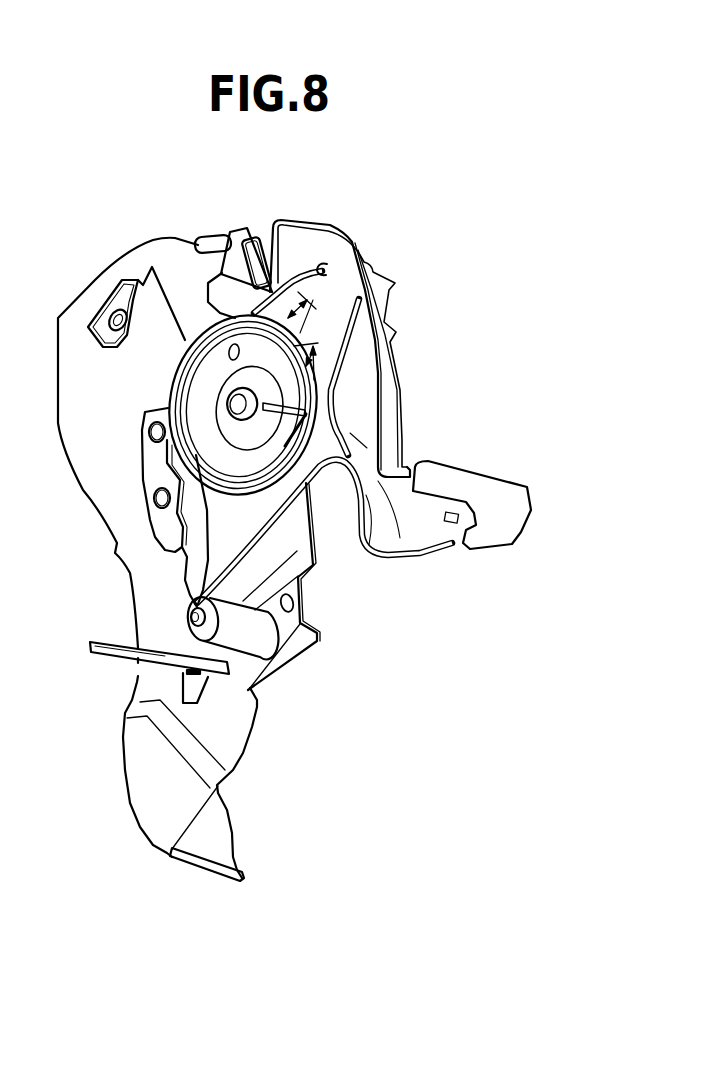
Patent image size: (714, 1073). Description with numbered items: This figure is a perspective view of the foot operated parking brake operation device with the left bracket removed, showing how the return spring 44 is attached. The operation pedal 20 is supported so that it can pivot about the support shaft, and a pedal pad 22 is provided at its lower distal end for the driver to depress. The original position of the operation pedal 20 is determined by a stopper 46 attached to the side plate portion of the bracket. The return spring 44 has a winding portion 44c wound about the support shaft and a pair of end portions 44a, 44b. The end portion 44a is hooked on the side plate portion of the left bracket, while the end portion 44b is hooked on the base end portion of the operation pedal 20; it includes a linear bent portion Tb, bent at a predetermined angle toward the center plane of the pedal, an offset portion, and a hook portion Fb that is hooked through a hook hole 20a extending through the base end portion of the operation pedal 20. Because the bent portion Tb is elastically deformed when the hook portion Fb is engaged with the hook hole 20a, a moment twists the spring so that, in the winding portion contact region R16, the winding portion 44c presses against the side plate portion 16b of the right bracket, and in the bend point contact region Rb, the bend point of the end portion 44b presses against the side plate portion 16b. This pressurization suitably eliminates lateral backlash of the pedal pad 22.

The side plate portion 16b is at (297, 551).
The operation pedal 20 is at (400, 413).
The hook hole 20a is at (328, 263).
The pedal pad 22 is at (486, 492).
The return spring 44 is at (320, 352).
The end portion 44a is at (333, 468).
The end portion 44b is at (309, 256).
The winding portion 44c is at (300, 333).
The stopper 46 is at (252, 635).
The winding portion contact region R16 is at (314, 380).
The bend point contact region Rb is at (317, 308).
The bent portion Tb is at (268, 236).
The hook portion Fb is at (318, 263).